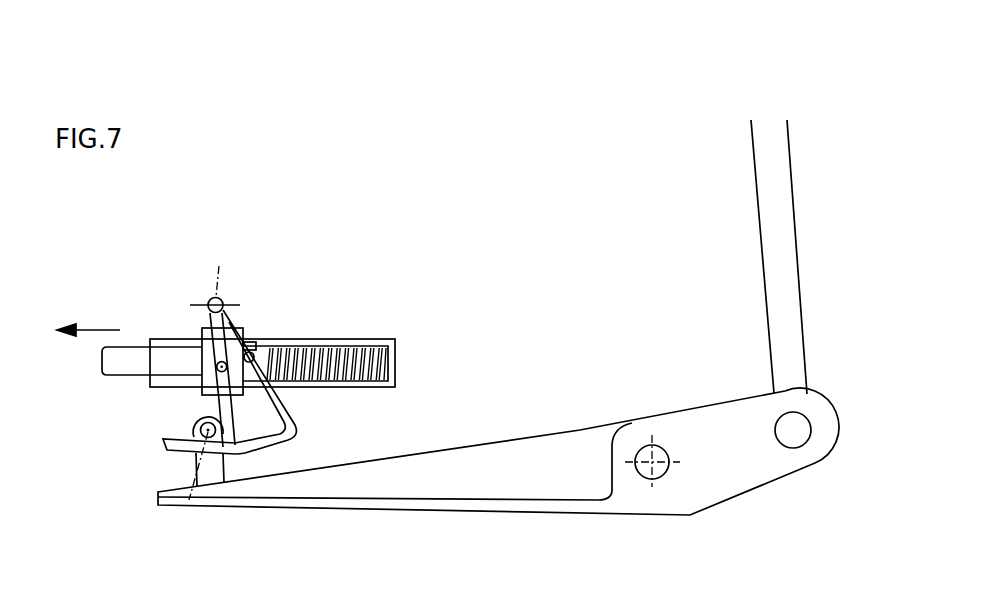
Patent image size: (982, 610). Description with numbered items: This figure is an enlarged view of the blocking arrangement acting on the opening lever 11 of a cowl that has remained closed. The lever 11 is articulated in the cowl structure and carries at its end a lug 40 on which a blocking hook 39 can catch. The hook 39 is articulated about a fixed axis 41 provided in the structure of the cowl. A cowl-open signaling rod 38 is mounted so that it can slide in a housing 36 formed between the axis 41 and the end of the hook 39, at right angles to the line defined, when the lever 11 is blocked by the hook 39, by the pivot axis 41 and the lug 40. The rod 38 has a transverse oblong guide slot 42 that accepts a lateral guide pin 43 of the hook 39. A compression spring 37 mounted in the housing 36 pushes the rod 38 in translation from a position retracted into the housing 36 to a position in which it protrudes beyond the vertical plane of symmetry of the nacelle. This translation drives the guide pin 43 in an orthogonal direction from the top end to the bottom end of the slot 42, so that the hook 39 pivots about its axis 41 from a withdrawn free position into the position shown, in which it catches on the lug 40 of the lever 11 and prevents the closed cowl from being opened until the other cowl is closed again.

The opening lever 11 is at (345, 481).
The housing 36 is at (397, 352).
The compression spring 37 is at (307, 338).
The cowl-open signaling rod 38 is at (105, 364).
The blocking hook 39 is at (179, 446).
The lug 40 is at (189, 500).
The fixed axis 41 is at (245, 229).
The transverse oblong guide slot 42 is at (222, 348).
The lateral guide pin 43 is at (215, 383).